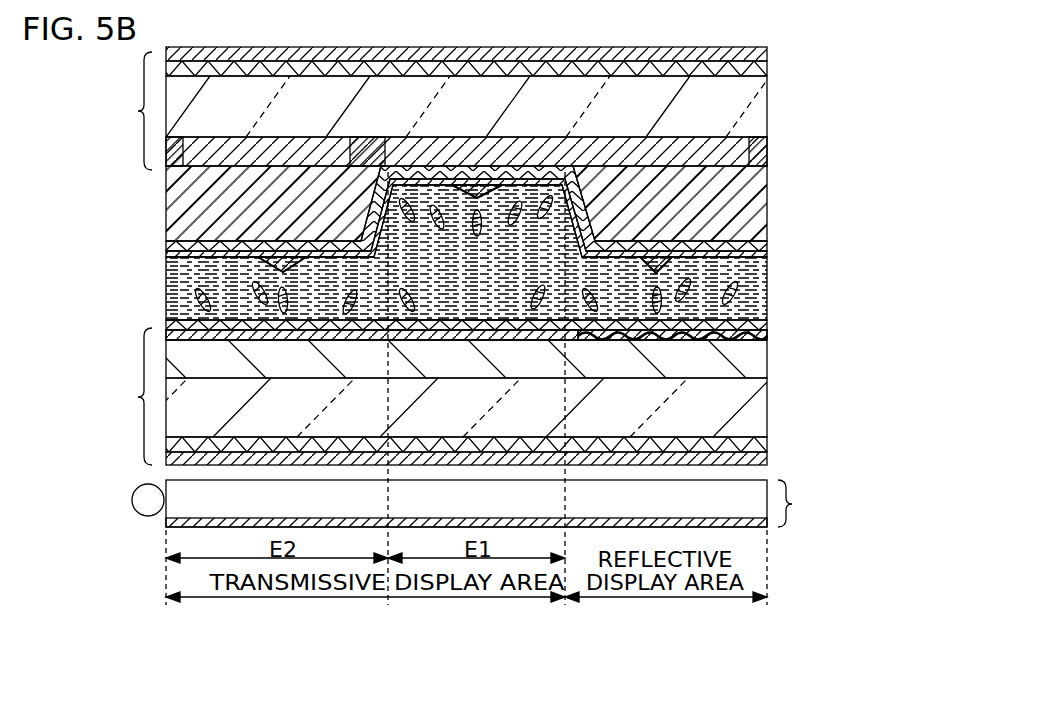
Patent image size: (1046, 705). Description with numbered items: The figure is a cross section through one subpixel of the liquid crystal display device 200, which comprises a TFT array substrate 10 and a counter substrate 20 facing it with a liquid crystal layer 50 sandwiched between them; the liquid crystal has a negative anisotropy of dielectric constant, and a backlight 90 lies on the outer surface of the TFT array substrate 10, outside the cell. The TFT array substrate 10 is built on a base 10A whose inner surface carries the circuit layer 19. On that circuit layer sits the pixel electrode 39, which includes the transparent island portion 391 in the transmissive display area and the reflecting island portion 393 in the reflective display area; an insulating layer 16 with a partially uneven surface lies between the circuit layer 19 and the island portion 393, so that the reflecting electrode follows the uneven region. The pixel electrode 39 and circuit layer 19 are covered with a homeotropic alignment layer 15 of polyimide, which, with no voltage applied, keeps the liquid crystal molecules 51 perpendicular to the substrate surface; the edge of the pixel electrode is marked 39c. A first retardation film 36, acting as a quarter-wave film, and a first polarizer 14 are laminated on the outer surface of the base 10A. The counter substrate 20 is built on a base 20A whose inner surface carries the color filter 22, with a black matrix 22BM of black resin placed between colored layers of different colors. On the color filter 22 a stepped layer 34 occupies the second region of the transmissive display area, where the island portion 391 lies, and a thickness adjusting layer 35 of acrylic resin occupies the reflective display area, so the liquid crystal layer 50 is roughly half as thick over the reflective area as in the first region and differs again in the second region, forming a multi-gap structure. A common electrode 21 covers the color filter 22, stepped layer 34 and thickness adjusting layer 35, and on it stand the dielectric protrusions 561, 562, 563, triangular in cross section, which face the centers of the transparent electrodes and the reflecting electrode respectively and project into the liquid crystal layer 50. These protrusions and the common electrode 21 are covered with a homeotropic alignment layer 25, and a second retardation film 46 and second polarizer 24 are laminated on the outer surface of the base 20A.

The liquid crystal display device 200 is at (834, 45).
The counter substrate 20 is at (132, 111).
The second polarizer 24 is at (768, 50).
The second retardation film 46 is at (768, 72).
The base 20A is at (768, 96).
The color filter 22 is at (760, 130).
The black matrix 22BM is at (383, 165).
The stepped layer 34 is at (183, 209).
The thickness adjusting layer 35 is at (760, 200).
The common electrode 21 is at (768, 244).
The homeotropic alignment layer 25 is at (768, 256).
The liquid crystal layer 50 is at (755, 296).
The liquid crystal molecules 51 is at (405, 226).
The pixel electrode 39 is at (455, 310).
The pixel electrode edge portion 39c is at (380, 328).
The dielectric protrusion 561 is at (290, 274).
The dielectric protrusion 562 is at (487, 200).
The dielectric protrusion 563 is at (641, 273).
The homeotropic alignment layer 15 is at (765, 322).
The insulating layer 16 is at (765, 338).
The island portion 393 is at (735, 335).
The island portion 391 is at (183, 328).
The circuit layer 19 is at (765, 372).
The base 10A is at (755, 404).
The TFT array substrate 10 is at (132, 396).
The first retardation film 36 is at (765, 441).
The first polarizer 14 is at (765, 460).
The backlight 90 is at (479, 503).